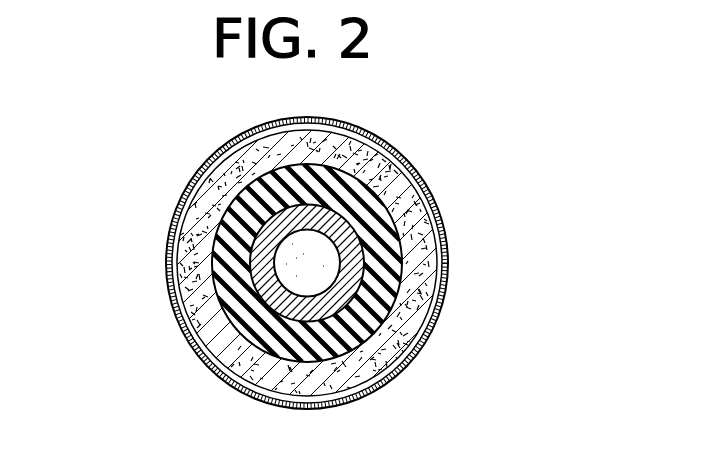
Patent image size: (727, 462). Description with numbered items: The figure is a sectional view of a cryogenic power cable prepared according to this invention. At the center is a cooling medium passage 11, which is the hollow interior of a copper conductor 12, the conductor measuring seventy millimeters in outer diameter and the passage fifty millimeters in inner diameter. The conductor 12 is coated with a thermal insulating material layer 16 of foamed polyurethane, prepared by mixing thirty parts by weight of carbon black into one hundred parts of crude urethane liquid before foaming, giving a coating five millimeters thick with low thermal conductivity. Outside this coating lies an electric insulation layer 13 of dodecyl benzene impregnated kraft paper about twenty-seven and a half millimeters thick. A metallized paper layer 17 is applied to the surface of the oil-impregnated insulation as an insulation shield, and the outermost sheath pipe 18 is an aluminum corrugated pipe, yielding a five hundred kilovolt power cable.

The cooling medium passage 11 is at (307, 243).
The conductor 12 is at (355, 185).
The electric insulation layer 13 is at (388, 209).
The thermal insulating material layer 16 is at (257, 187).
The metallized paper layer 17 is at (217, 160).
The sheath pipe 18 is at (187, 192).